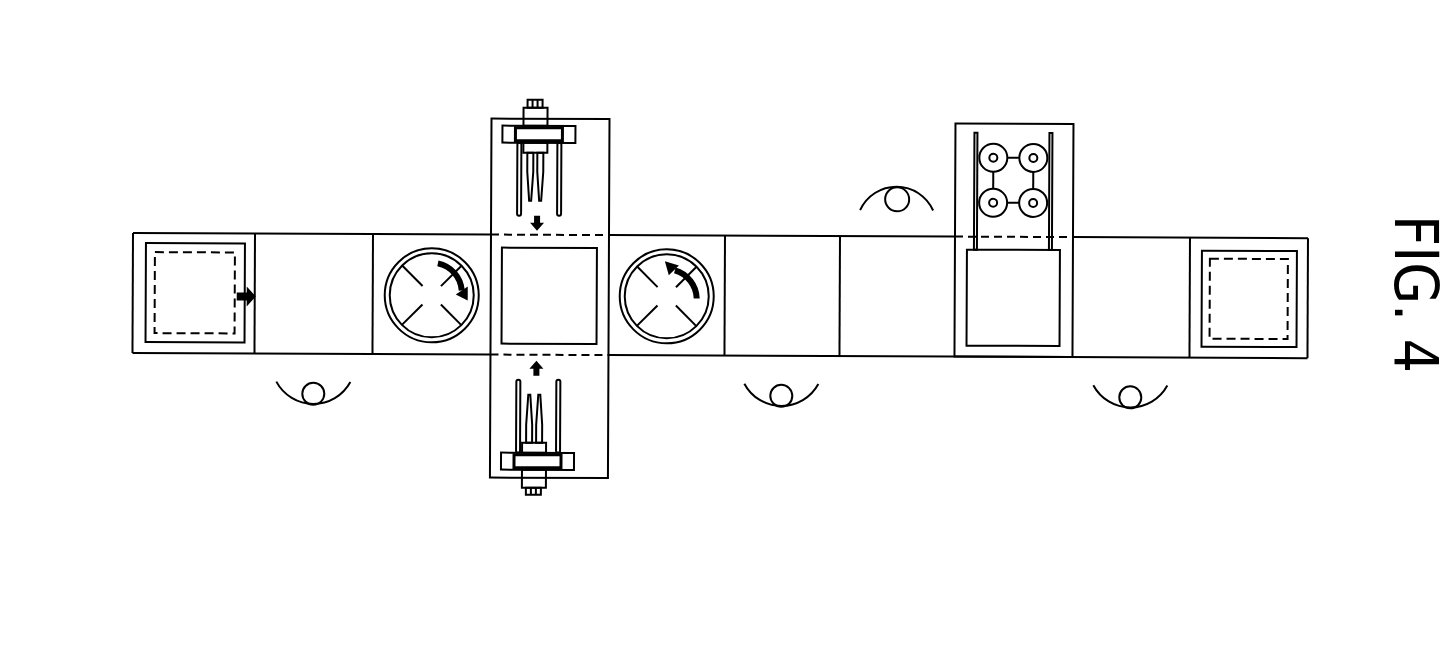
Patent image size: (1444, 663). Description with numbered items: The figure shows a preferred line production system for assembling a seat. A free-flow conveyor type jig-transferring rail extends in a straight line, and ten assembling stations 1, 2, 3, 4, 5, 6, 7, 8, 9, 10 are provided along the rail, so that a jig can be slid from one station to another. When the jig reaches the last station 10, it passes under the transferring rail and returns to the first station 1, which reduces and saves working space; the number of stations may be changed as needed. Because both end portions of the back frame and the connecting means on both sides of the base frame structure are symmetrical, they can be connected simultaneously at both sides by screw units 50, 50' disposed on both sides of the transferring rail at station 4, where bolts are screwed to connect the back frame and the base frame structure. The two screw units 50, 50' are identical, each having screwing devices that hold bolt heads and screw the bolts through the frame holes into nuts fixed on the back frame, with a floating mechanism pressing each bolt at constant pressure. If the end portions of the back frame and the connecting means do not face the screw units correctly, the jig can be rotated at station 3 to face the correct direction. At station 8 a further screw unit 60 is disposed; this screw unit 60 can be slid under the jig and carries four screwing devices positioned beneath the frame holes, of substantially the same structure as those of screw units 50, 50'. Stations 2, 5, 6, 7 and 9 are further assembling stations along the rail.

The first station 1 is at (201, 292).
The station 2 is at (313, 343).
The station 3 is at (432, 295).
The station 4 is at (549, 296).
The station 5 is at (667, 296).
The station 6 is at (781, 345).
The station 7 is at (897, 249).
The station 8 is at (1013, 298).
The station 9 is at (1130, 346).
The last station 10 is at (1249, 299).
The screw unit 50 is at (569, 129).
The screw unit 50' is at (544, 464).
The screw unit 60 is at (1032, 144).